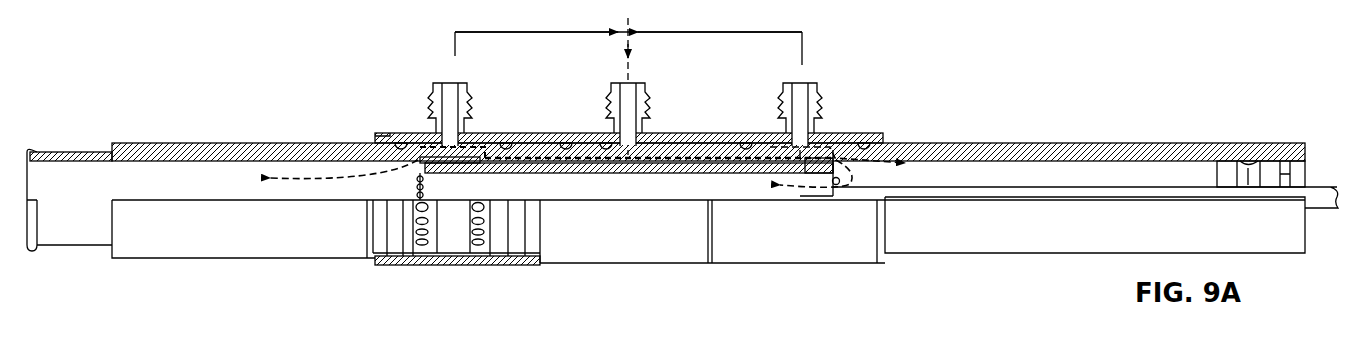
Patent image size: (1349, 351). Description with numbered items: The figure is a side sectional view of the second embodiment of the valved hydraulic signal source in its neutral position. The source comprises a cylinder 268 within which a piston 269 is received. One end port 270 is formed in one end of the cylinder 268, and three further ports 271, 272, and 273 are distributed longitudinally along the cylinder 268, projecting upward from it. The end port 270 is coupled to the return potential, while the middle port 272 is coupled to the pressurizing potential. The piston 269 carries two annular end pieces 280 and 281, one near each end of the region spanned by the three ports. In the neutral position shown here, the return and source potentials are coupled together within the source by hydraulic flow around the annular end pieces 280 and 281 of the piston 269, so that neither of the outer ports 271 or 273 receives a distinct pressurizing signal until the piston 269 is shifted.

The cylinder 268 is at (1090, 143).
The piston 269 is at (667, 173).
The end port 270 is at (65, 152).
The port 271 is at (382, 133).
The port 272 is at (682, 133).
The port 273 is at (866, 133).
The annular end piece 280 is at (432, 173).
The annular end piece 281 is at (813, 173).